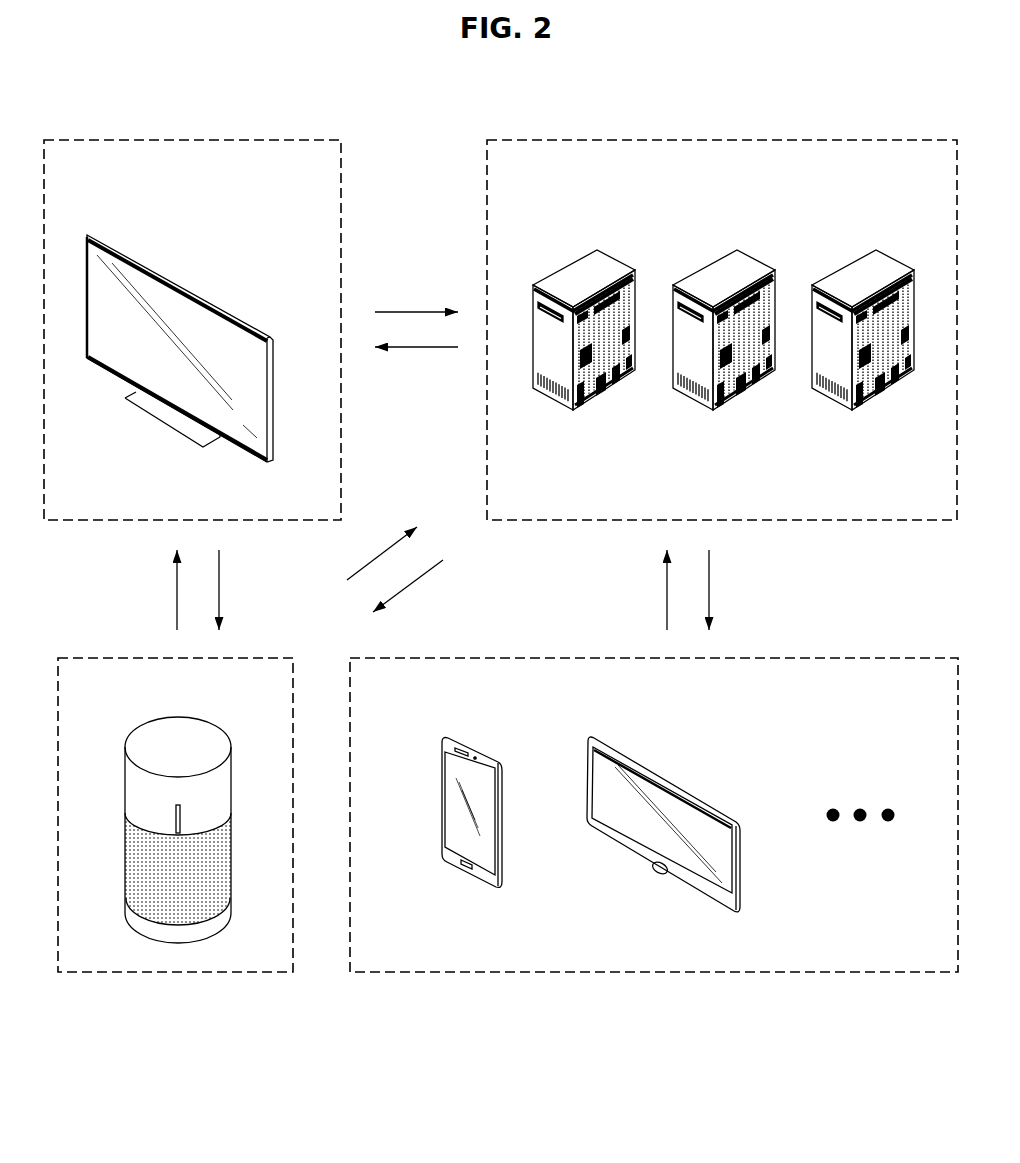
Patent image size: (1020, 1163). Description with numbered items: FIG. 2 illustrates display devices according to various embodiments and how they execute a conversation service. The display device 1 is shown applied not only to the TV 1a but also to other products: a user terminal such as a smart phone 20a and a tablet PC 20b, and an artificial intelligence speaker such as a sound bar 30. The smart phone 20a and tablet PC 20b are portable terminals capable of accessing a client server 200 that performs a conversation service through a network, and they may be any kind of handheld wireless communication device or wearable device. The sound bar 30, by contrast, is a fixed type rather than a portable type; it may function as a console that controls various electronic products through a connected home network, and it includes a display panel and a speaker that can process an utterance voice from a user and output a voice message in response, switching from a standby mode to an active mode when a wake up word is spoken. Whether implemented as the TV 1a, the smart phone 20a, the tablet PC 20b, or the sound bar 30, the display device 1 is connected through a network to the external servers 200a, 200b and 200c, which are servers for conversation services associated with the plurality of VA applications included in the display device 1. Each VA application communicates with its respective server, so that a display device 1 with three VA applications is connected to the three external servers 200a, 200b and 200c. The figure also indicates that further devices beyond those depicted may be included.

The display device 1 is at (258, 139).
The TV 1a is at (162, 273).
The client server 200 is at (727, 139).
The external server 200a is at (613, 268).
The external server 200b is at (748, 267).
The external server 200c is at (887, 267).
The sound bar 30 is at (205, 732).
The smart phone 20a is at (478, 745).
The tablet PC 20b is at (668, 780).